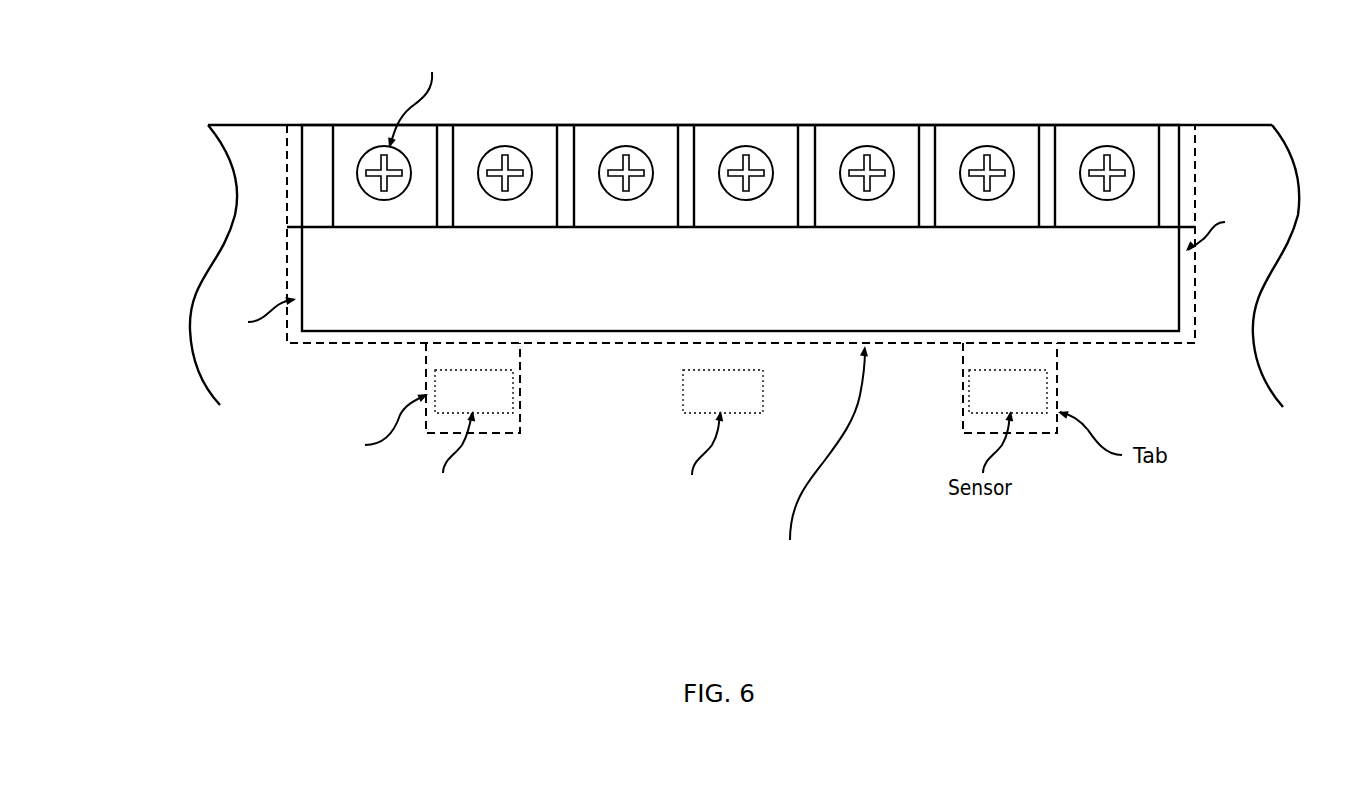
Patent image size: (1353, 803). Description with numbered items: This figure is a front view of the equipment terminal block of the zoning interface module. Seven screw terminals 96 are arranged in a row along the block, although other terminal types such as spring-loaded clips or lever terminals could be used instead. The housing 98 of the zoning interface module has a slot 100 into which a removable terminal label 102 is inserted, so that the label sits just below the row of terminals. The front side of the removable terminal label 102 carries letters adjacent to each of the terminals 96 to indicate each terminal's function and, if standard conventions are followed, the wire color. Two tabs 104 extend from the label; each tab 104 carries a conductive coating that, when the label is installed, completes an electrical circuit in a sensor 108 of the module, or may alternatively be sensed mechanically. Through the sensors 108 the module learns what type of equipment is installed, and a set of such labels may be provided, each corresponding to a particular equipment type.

The screw terminal 96 is at (627, 146).
The housing 98 is at (1240, 125).
The slot 100 is at (290, 270).
The removable terminal label 102 is at (1152, 345).
The tab 104 is at (520, 358).
The sensor 108 is at (683, 388).